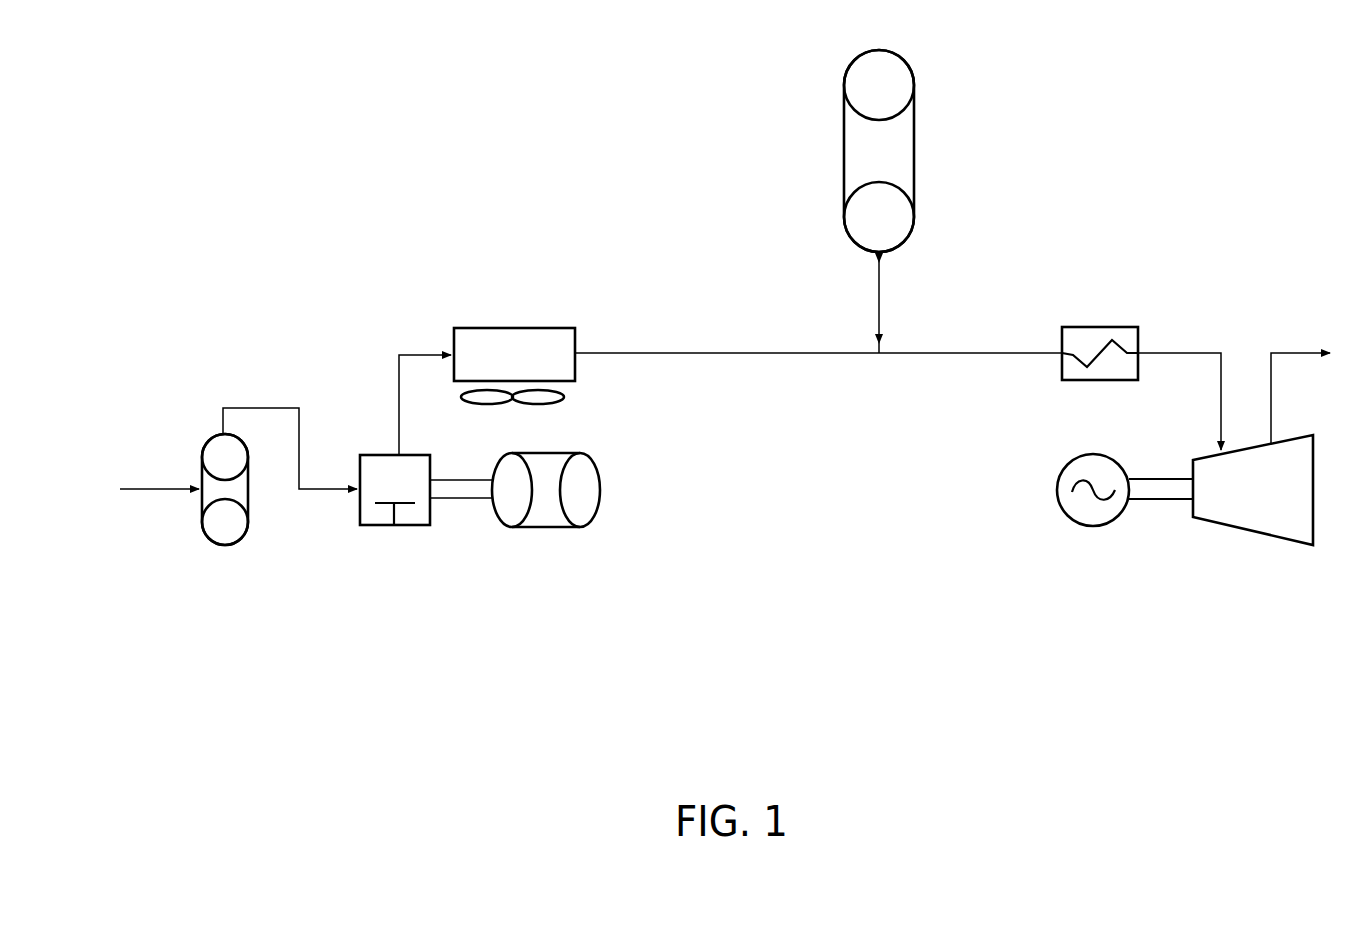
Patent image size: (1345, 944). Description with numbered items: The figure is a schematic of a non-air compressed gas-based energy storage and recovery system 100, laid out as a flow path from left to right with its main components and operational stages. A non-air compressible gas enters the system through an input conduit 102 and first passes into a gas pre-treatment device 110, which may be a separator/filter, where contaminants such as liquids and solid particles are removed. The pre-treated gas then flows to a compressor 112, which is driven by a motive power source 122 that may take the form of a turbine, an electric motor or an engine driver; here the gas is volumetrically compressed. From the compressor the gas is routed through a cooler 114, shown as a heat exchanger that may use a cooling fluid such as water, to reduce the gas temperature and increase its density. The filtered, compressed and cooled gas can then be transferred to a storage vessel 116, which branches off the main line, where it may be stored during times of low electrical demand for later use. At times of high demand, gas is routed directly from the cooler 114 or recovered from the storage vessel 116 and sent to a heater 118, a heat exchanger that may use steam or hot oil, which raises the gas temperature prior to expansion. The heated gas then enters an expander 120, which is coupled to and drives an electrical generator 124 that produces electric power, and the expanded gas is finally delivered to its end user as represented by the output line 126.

The non-air compressed gas-based energy storage system 100 is at (596, 124).
The input conduit 102 is at (148, 489).
The gas pre-treatment device 110 is at (224, 545).
The compressor 112 is at (394, 525).
The cooler 114 is at (512, 328).
The storage vessel 116 is at (843, 157).
The heater 118 is at (1097, 327).
The expander 120 is at (1246, 529).
The motive power source 122 is at (545, 527).
The electrical generator 124 is at (1091, 527).
The output line 126 is at (1305, 353).